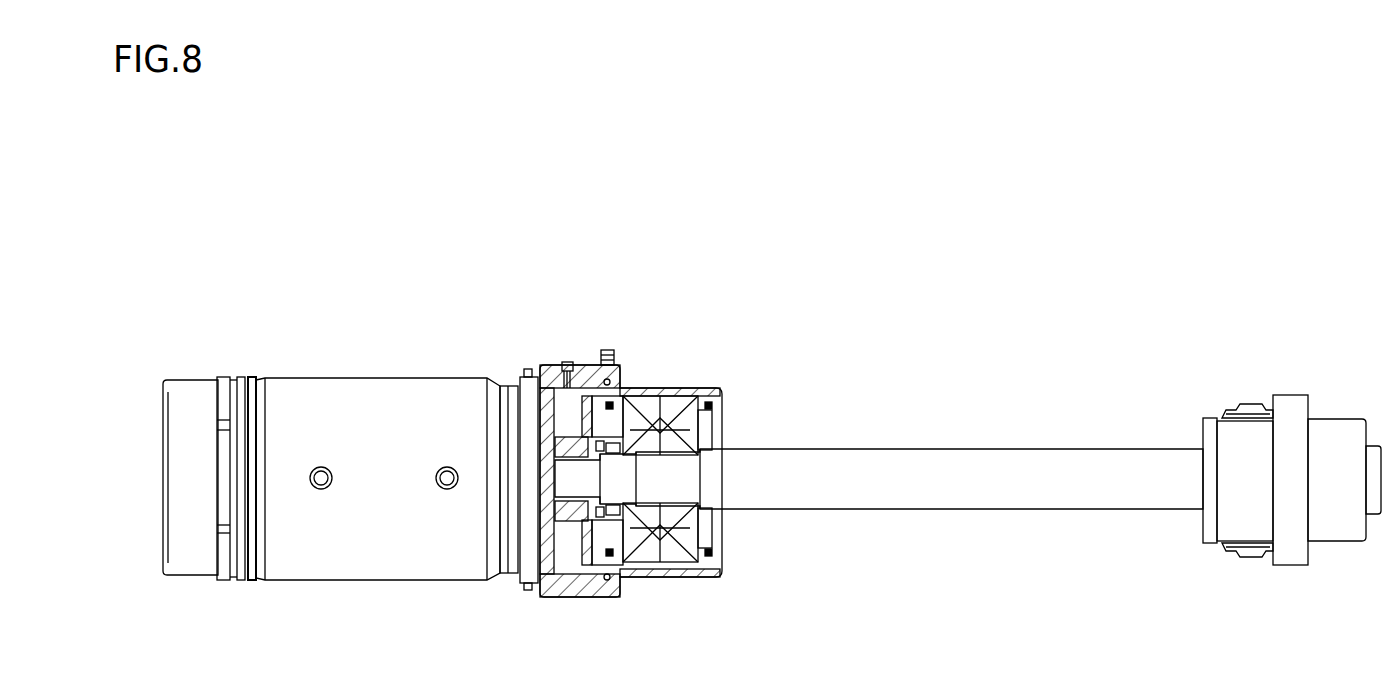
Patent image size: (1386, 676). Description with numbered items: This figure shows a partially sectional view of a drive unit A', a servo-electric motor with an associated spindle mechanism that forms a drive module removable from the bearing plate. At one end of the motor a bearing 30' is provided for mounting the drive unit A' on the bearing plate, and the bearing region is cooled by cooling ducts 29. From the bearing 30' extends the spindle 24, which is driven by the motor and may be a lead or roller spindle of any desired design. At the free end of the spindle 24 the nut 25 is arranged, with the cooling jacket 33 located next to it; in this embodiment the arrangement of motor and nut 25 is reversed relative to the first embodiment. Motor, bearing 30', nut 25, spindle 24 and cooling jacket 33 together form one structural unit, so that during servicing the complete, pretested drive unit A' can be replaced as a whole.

The drive unit A' is at (550, 393).
The bearing 30' is at (628, 426).
The cooling ducts 29 is at (612, 380).
The spindle 24 is at (1070, 449).
The cooling jacket 33 is at (1235, 415).
The nut 25 is at (1303, 400).